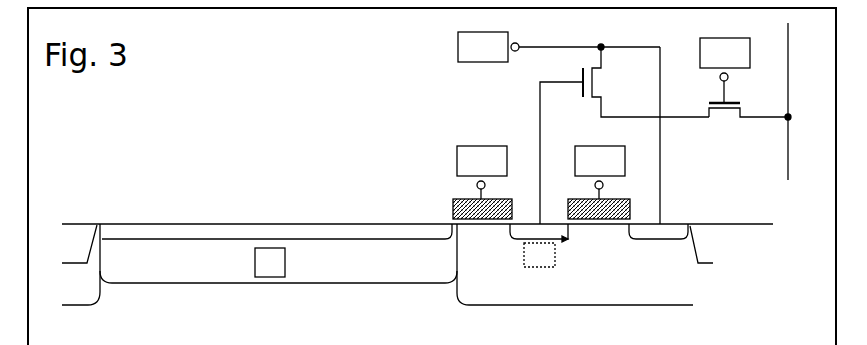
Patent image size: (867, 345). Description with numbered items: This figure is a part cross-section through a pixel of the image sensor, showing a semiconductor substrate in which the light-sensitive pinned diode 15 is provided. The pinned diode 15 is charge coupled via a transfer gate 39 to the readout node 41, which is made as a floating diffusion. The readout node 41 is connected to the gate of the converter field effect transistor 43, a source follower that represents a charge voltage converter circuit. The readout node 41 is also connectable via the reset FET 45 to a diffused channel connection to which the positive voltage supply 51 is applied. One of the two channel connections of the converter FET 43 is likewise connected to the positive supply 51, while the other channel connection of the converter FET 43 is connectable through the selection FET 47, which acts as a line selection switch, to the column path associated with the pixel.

The pinned diode 15 is at (198, 224).
The transfer gate 39 is at (455, 210).
The readout node 41 is at (570, 241).
The converter field effect transistor 43 is at (597, 83).
The reset FET 45 is at (635, 197).
The selection FET 47 is at (724, 120).
The positive voltage supply 51 is at (458, 51).